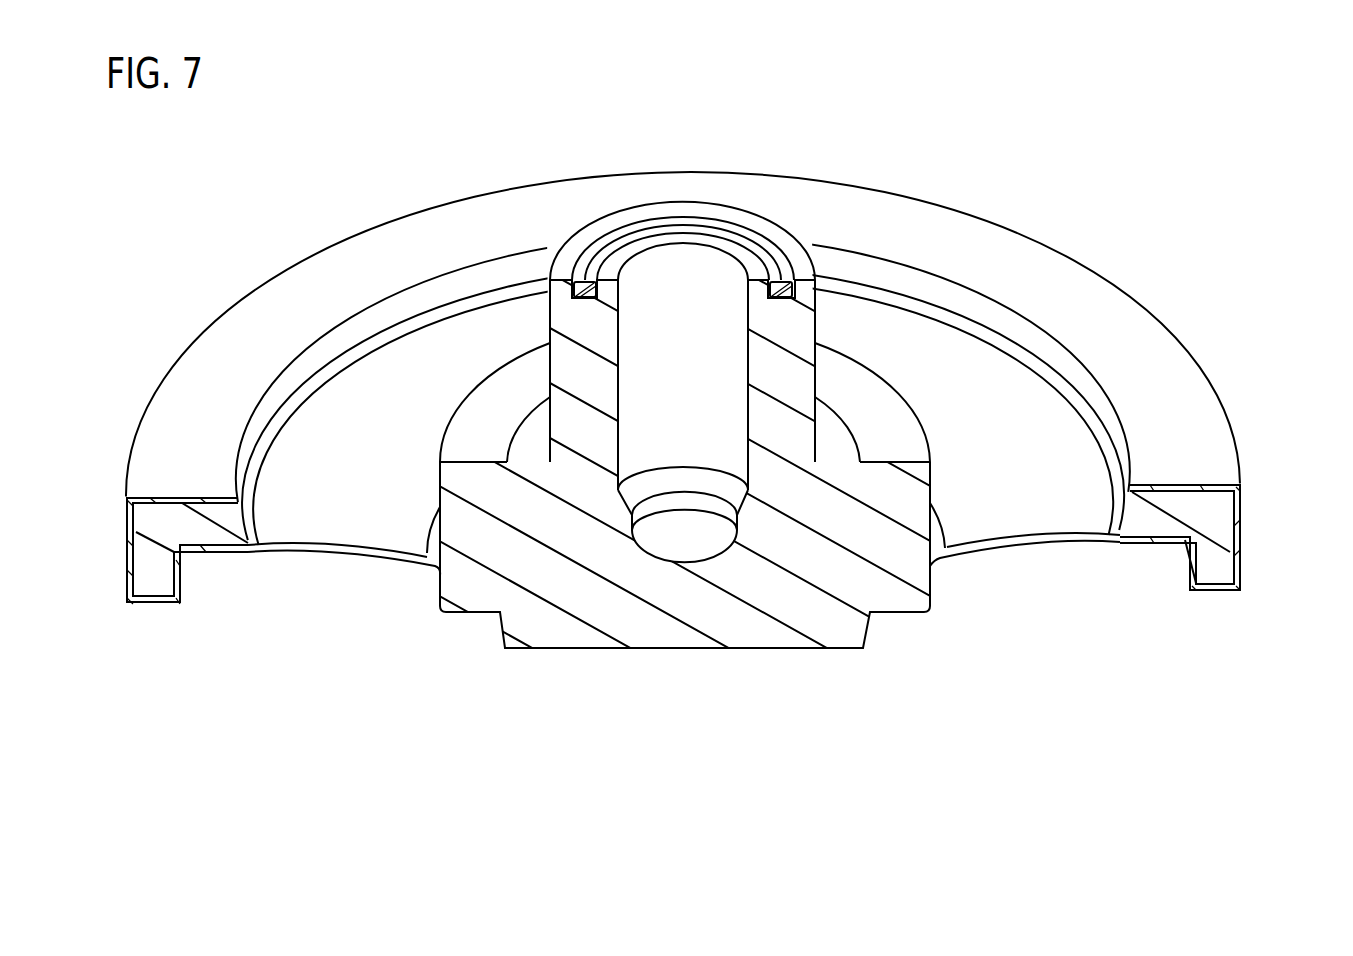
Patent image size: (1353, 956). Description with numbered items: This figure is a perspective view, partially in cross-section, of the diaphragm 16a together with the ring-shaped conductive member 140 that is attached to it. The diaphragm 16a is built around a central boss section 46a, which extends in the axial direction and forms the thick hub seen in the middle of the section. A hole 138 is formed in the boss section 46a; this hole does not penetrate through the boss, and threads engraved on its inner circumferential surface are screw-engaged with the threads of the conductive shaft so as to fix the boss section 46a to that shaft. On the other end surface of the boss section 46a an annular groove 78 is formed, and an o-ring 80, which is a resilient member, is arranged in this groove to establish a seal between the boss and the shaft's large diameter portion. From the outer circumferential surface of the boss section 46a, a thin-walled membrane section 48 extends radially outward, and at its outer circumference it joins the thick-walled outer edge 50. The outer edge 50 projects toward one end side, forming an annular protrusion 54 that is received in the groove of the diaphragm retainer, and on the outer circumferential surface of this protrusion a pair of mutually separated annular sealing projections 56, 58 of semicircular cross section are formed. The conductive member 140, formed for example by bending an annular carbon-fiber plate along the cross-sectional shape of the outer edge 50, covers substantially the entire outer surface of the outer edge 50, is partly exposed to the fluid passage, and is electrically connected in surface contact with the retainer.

The hole 138 is at (727, 257).
The o-ring 80 is at (750, 242).
The annular groove 78 is at (576, 282).
The conductive member 140 is at (1218, 457).
The outer edge 50 is at (1210, 509).
The annular sealing projection 58 is at (1228, 548).
The annular sealing projection 56 is at (1232, 567).
The annular protrusion 54 is at (158, 575).
The membrane section 48 is at (323, 548).
The boss section 46a is at (750, 627).
The diaphragm 16a is at (837, 661).